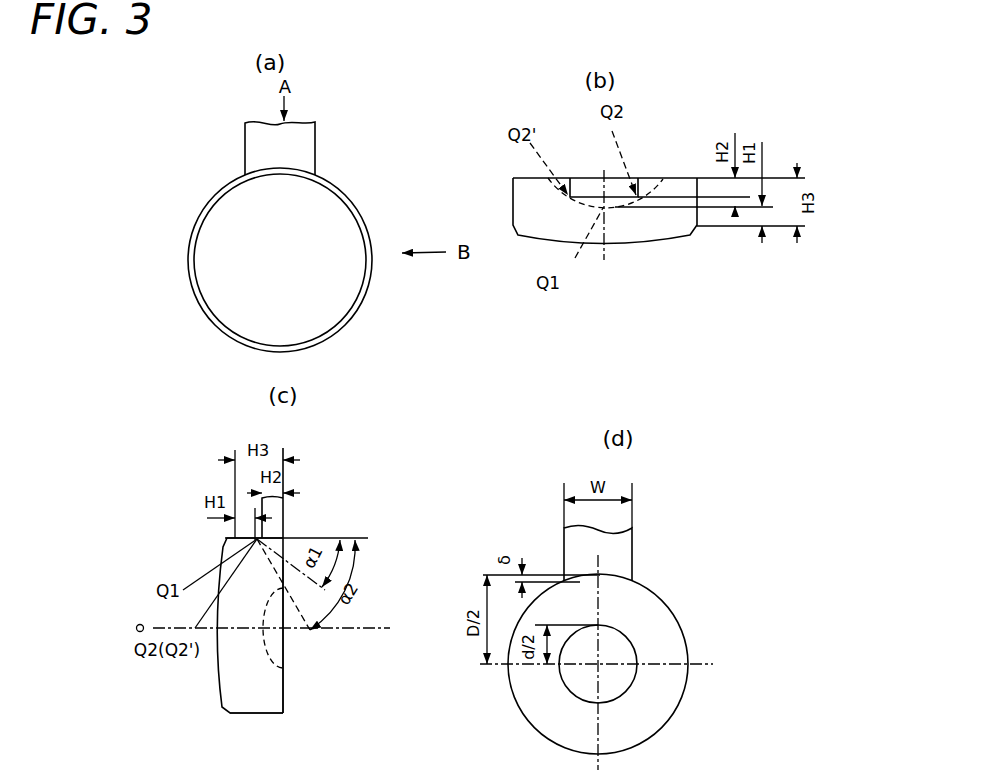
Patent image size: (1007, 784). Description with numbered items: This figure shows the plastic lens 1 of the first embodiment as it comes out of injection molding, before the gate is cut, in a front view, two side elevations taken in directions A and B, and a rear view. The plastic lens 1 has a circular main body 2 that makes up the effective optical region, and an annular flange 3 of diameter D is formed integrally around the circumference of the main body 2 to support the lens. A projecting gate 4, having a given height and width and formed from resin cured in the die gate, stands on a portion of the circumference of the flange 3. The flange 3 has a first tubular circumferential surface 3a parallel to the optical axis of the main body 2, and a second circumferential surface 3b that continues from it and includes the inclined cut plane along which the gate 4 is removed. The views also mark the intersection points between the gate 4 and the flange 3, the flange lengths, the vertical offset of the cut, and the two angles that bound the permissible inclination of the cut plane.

The plastic lens 1 is at (370, 197).
The main body 2 is at (663, 190).
The flange 3 is at (687, 190).
The first tubular circumferential surface 3a is at (245, 715).
The second circumferential surface 3b is at (272, 715).
The gate 4 is at (305, 138).